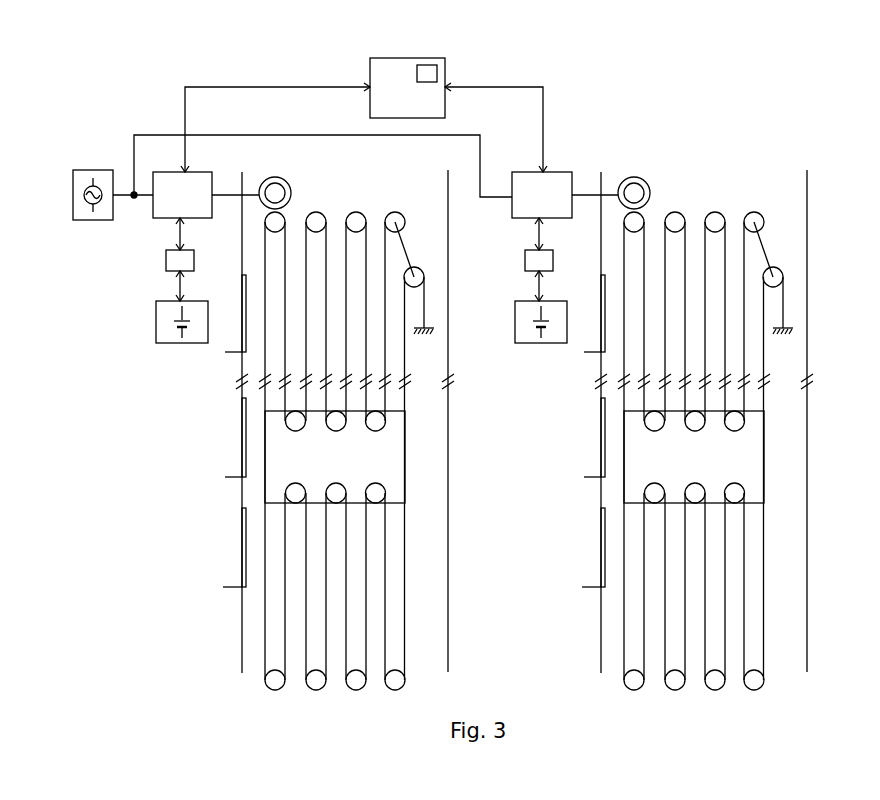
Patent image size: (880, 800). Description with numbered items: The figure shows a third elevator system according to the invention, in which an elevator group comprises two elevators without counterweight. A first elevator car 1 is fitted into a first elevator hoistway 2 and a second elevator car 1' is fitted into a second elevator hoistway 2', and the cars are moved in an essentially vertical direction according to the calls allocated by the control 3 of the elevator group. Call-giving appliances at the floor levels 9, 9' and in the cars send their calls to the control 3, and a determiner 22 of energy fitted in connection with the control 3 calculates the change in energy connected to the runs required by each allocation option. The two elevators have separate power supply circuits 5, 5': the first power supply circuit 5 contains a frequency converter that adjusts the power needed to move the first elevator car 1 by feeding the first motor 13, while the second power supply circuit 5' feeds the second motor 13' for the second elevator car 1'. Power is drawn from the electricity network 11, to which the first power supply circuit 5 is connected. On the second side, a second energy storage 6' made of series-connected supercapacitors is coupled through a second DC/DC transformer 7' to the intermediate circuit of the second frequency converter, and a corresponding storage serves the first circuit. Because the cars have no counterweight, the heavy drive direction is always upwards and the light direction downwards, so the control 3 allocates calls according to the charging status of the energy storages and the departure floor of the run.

The first elevator car 1 is at (352, 464).
The second elevator car 1' is at (714, 464).
The first elevator hoistway 2 is at (310, 421).
The second elevator hoistway 2' is at (669, 421).
The control of the elevator group 3 is at (390, 58).
The determiner of energy 22 is at (432, 75).
The first power supply circuit 5 is at (305, 172).
The second power supply circuit 5' is at (542, 217).
The second energy storage 6' is at (356, 356).
The second DC/DC transformer 7' is at (334, 260).
The floor level 9 is at (208, 431).
The floor level 9' is at (562, 431).
The electricity network 11 is at (90, 166).
The first motor 13 is at (300, 192).
The second motor 13' is at (662, 192).